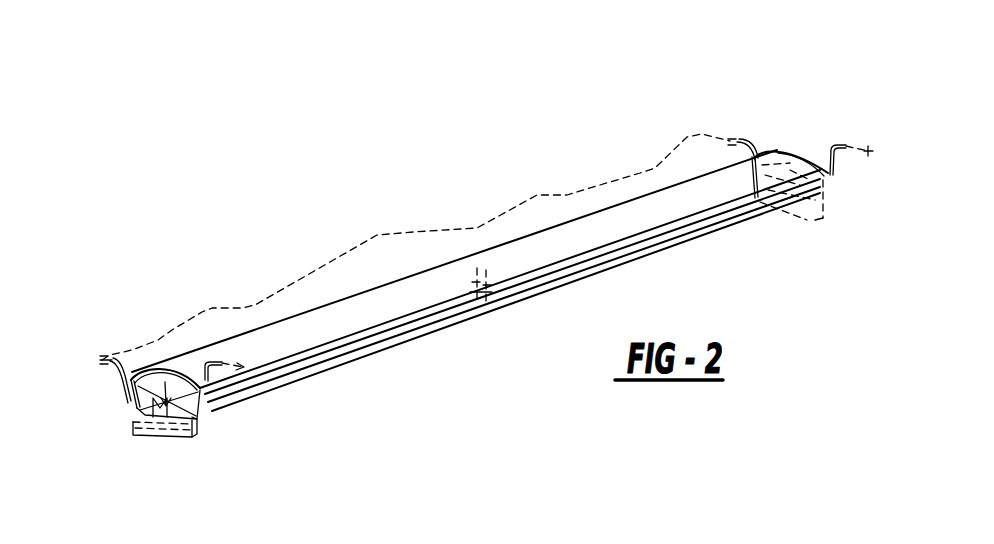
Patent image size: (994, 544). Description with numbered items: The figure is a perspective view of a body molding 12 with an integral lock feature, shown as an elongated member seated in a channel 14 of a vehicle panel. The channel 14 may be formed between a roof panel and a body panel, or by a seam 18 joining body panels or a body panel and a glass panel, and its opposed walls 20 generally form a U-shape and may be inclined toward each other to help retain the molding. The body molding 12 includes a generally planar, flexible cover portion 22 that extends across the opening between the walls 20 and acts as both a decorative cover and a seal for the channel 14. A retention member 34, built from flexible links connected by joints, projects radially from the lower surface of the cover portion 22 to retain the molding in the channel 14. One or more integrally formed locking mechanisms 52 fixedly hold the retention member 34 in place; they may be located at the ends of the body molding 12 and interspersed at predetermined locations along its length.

The body molding 12 is at (803, 118).
The channel 14 is at (130, 408).
The seam 18 is at (152, 437).
The walls 20 is at (197, 428).
The cover portion 22 is at (312, 310).
The retention member 34 is at (120, 391).
The locking mechanism 52 is at (148, 405).